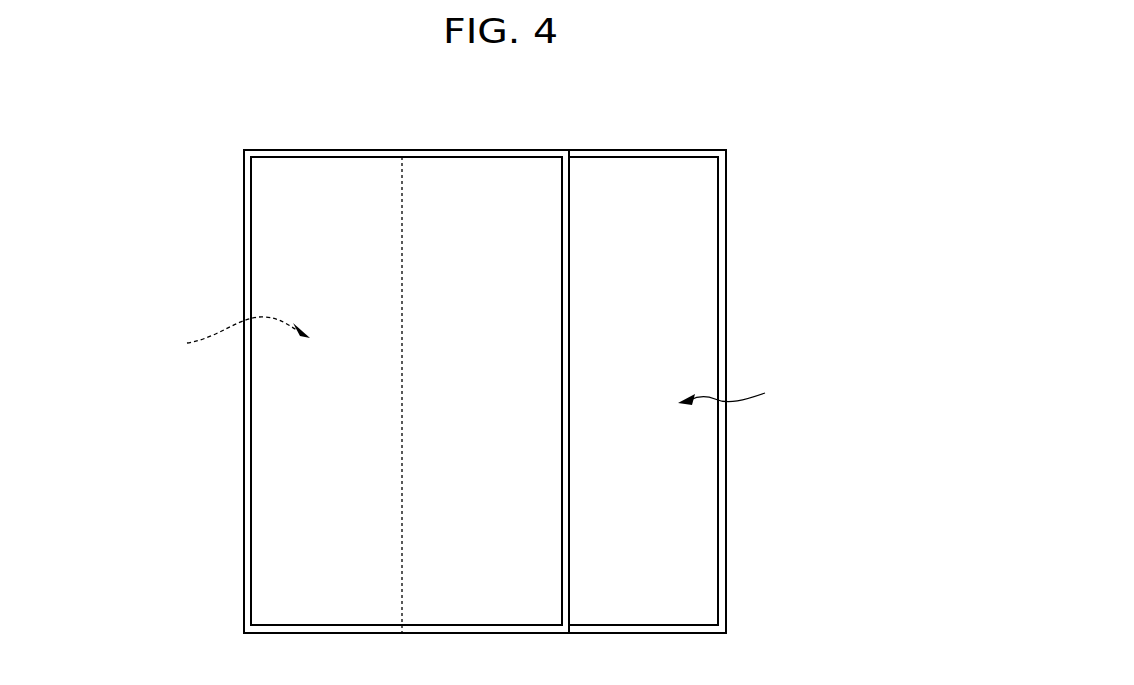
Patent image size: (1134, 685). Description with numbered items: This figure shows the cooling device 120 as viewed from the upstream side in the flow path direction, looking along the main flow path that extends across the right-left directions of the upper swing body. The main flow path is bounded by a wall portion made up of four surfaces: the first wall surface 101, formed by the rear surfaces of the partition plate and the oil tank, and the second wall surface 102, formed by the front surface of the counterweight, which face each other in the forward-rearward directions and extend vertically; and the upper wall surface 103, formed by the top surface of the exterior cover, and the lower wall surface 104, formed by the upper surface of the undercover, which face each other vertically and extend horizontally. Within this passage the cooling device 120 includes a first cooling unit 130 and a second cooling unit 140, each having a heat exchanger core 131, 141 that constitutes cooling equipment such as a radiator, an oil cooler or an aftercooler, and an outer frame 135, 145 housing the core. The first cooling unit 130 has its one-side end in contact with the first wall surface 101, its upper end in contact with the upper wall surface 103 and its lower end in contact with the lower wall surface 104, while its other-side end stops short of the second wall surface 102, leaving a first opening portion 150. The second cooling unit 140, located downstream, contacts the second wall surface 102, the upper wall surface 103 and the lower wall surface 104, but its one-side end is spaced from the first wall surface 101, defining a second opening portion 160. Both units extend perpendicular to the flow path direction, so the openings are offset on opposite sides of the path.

The cooling device 120 is at (600, 140).
The first cooling unit 130 is at (148, 158).
The core 131 is at (278, 193).
The outer frame 135 is at (245, 240).
The second cooling unit 140 is at (800, 205).
The core 141 is at (692, 242).
The outer frame 145 is at (725, 281).
The first opening portion 150 is at (741, 389).
The second opening portion 160 is at (227, 340).
The first wall surface 101 is at (246, 506).
The second wall surface 102 is at (725, 495).
The upper wall surface 103 is at (467, 157).
The lower wall surface 104 is at (500, 632).